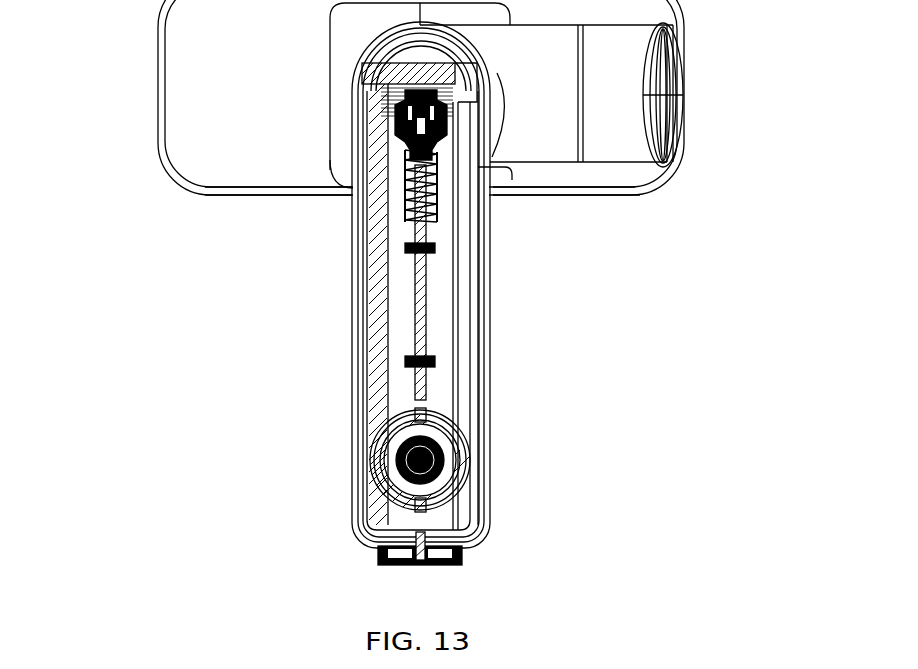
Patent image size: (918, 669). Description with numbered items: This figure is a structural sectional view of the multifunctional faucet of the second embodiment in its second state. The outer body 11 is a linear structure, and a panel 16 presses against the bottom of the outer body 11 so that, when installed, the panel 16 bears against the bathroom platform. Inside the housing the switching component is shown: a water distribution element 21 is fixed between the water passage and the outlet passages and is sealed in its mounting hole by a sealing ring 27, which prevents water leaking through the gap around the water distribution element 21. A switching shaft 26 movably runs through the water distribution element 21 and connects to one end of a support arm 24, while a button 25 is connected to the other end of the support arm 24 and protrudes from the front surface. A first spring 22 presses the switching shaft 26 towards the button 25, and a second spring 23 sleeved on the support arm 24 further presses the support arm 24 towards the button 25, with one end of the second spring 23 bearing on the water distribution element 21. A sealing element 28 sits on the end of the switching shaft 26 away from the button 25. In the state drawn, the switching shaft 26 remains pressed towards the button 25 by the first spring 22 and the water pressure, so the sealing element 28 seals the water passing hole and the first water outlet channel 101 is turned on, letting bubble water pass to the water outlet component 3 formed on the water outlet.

The sealing element 28 is at (360, 73).
The sealing ring 27 is at (365, 99).
The second spring 23 is at (353, 182).
The first water outlet channel 101 is at (362, 287).
The support arm 24 is at (372, 362).
The button 25 is at (378, 561).
The first spring 22 is at (578, 27).
The panel 16 is at (678, 167).
The water distribution element 21 is at (443, 140).
The switching shaft 26 is at (430, 175).
The outer body 11 is at (493, 453).
The water outlet component 3 is at (470, 492).